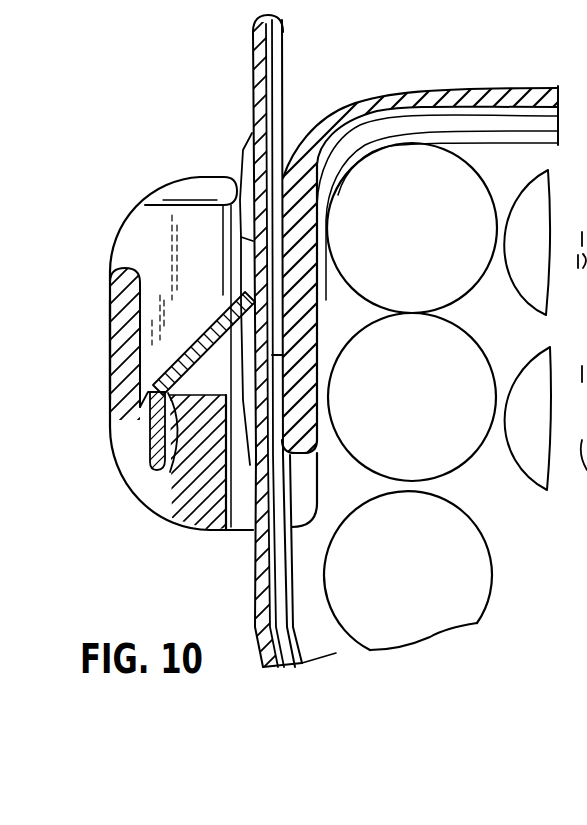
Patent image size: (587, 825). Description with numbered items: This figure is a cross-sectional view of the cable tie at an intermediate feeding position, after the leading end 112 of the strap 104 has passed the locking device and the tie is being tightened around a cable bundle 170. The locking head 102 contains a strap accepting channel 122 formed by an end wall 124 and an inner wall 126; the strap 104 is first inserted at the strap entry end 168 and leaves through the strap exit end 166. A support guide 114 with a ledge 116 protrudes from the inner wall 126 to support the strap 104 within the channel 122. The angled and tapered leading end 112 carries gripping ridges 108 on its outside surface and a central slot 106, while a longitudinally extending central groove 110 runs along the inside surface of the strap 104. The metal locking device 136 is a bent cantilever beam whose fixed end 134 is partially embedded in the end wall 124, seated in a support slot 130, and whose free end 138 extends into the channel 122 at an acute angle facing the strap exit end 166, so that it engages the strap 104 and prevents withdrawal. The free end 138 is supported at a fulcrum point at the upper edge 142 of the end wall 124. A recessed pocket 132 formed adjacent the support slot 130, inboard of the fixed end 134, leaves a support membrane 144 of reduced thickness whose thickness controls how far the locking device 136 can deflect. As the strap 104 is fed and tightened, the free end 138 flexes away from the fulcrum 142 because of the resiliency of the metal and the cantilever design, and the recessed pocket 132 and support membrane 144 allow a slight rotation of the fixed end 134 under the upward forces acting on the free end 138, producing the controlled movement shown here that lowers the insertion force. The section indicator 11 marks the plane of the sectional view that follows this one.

The locking head 102 is at (125, 232).
The strap 104 is at (470, 90).
The central slot 106 is at (210, 333).
The gripping ridges 108 is at (246, 147).
The central groove 110 is at (273, 478).
The leading end 112 is at (252, 88).
The support guide 114 is at (245, 420).
The ledge 116 is at (286, 342).
The strap accepting channel 122 is at (236, 242).
The end wall 124 is at (118, 368).
The inner wall 126 is at (303, 258).
The support slot 130 is at (157, 473).
The recessed pocket 132 is at (180, 472).
The fixed end 134 is at (150, 437).
The metal locking device 136 is at (115, 252).
The free end 138 is at (225, 300).
The upper edge 142 is at (218, 383).
The support membrane 144 is at (194, 503).
The strap exit end 166 is at (295, 135).
The strap entry end 168 is at (236, 536).
The cable bundle 170 is at (388, 193).
The section line 11 is at (65, 297).